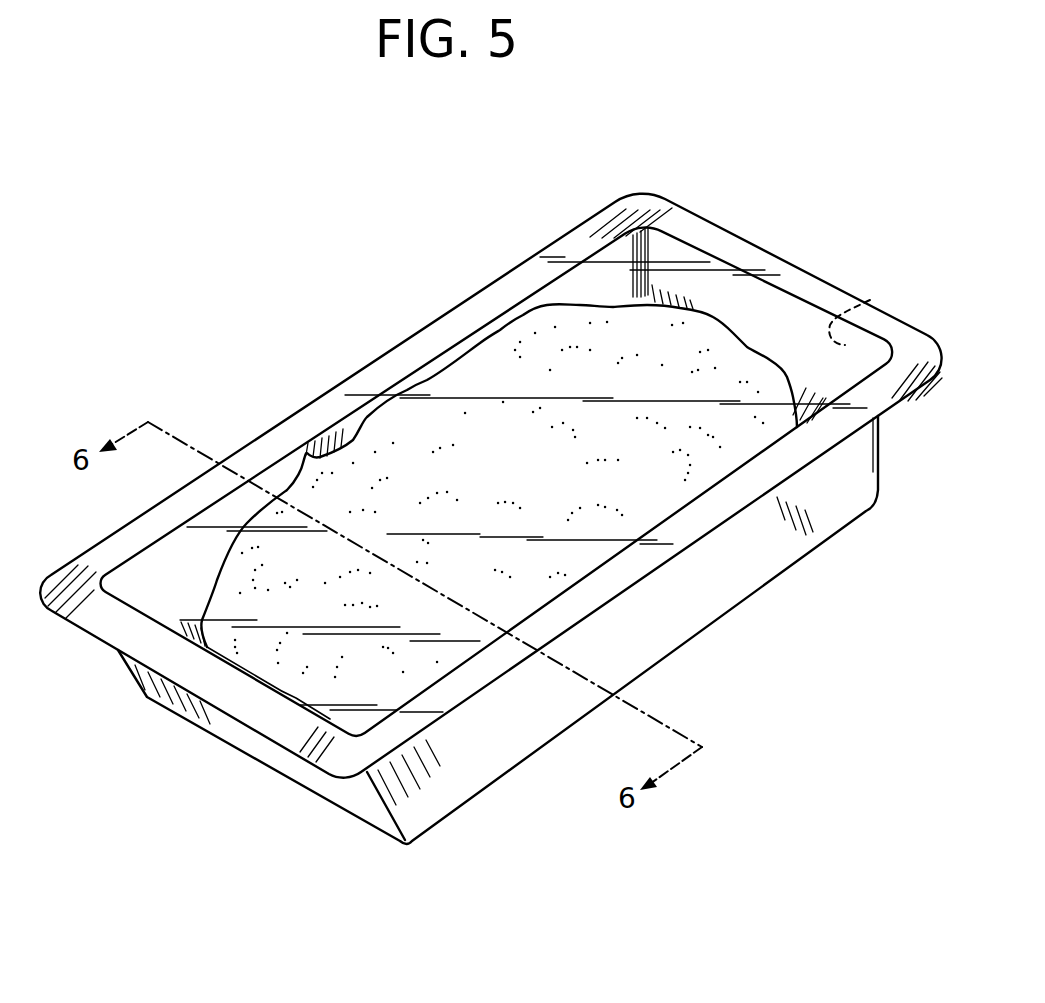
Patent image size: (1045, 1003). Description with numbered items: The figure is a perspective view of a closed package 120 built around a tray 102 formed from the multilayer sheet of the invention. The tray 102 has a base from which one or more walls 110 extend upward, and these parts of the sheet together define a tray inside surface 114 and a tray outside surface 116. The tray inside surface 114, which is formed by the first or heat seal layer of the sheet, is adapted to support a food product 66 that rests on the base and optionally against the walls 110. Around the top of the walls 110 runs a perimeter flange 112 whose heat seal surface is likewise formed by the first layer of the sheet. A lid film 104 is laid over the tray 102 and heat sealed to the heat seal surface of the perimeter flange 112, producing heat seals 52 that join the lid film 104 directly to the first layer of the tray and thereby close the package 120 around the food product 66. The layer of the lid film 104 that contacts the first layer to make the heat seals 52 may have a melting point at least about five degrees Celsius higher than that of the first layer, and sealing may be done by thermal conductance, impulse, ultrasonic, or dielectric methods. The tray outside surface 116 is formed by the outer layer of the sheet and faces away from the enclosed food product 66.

The heat seals 52 is at (783, 272).
The food product 66 is at (528, 477).
The tray 102 is at (710, 588).
The lid film 104 is at (605, 277).
The walls 110 is at (287, 768).
The perimeter flange 112 is at (268, 448).
The tray inside surface 114 is at (870, 300).
The tray outside surface 116 is at (778, 540).
The closed package 120 is at (335, 328).